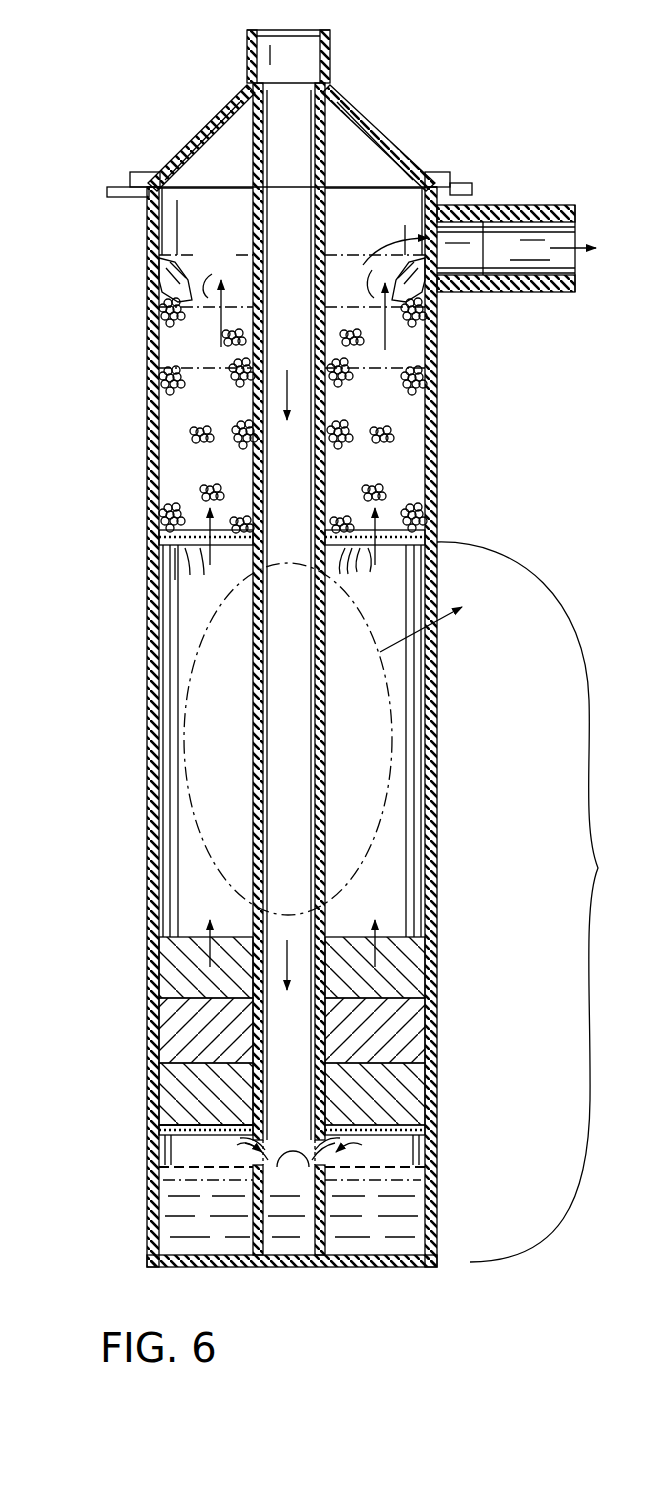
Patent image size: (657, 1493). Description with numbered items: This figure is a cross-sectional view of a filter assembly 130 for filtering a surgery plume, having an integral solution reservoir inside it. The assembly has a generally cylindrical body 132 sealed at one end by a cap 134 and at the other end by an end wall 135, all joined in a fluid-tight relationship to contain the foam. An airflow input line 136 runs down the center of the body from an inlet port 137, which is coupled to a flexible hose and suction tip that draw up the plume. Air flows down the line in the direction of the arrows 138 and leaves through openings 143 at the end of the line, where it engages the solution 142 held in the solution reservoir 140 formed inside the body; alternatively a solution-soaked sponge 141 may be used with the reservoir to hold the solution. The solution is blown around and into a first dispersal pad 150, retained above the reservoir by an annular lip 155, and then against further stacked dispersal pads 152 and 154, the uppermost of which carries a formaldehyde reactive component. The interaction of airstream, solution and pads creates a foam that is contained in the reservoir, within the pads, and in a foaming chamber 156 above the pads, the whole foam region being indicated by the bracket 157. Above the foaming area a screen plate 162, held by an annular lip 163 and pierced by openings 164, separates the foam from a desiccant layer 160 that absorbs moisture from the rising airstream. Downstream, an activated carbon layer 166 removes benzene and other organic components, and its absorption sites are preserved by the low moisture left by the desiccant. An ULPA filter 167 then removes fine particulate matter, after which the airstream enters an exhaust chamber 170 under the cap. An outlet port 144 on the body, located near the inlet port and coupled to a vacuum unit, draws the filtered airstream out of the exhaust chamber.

The filter device or assembly 130 is at (88, 1218).
The generally cylindrical body 132 is at (147, 744).
The cap 134 is at (364, 114).
The end wall 135 is at (216, 1268).
The airflow input line 136 is at (252, 683).
The inlet port 137 is at (330, 46).
The arrows 138 is at (130, 952).
The solution reservoir 140 is at (435, 1136).
The solution-soaked sponge 141 is at (160, 1168).
The solution 142 is at (415, 1207).
The openings 143 is at (291, 1148).
The outlet port 144 is at (577, 223).
The first dispersal pad 150 is at (432, 1078).
The dispersal pad 152 is at (432, 1022).
The dispersal pad 154 is at (430, 968).
The annular lip 155 is at (160, 1109).
The foaming chamber 156 is at (423, 730).
The bracket 157 is at (544, 902).
The desiccant layer 160 is at (428, 426).
The screen plate 162 is at (437, 543).
The annular lip 163 is at (165, 598).
The openings 164 is at (367, 573).
The activated carbon layer 166 is at (414, 348).
The ULPA filter 167 is at (162, 282).
The exhaust chamber 170 is at (382, 198).